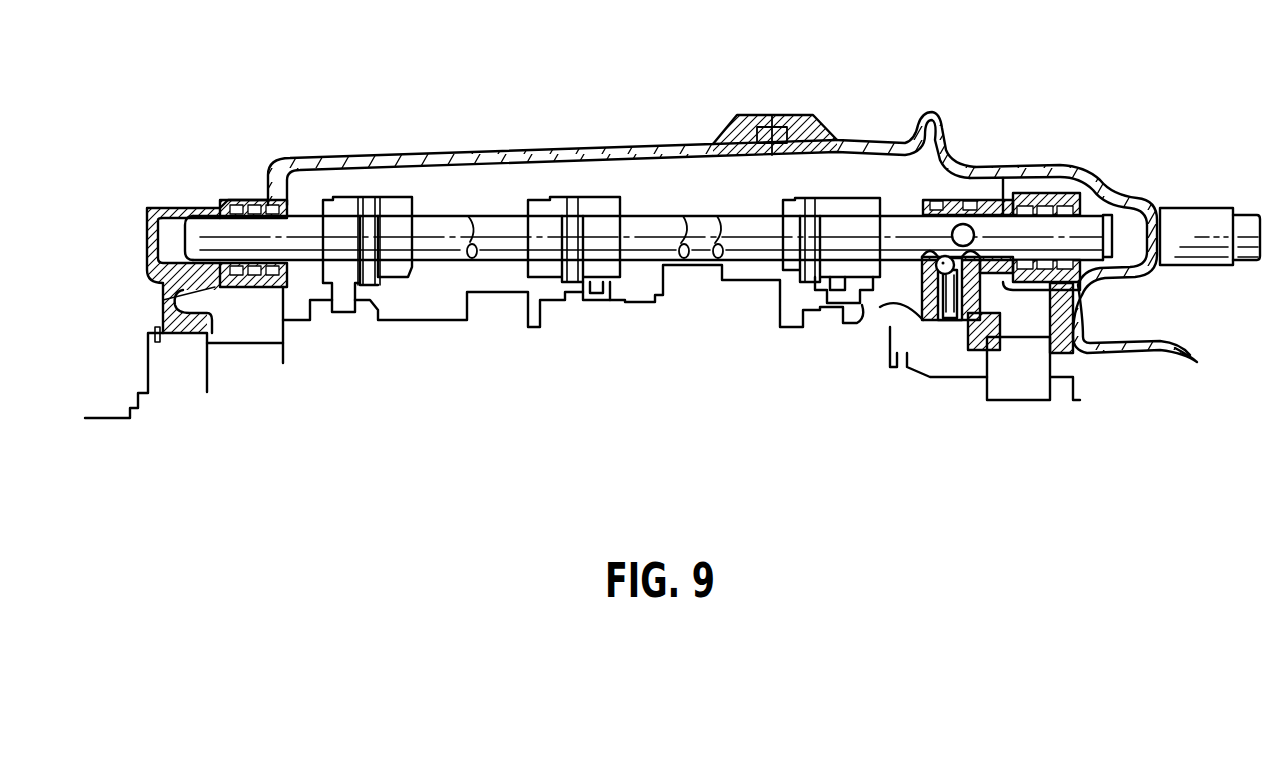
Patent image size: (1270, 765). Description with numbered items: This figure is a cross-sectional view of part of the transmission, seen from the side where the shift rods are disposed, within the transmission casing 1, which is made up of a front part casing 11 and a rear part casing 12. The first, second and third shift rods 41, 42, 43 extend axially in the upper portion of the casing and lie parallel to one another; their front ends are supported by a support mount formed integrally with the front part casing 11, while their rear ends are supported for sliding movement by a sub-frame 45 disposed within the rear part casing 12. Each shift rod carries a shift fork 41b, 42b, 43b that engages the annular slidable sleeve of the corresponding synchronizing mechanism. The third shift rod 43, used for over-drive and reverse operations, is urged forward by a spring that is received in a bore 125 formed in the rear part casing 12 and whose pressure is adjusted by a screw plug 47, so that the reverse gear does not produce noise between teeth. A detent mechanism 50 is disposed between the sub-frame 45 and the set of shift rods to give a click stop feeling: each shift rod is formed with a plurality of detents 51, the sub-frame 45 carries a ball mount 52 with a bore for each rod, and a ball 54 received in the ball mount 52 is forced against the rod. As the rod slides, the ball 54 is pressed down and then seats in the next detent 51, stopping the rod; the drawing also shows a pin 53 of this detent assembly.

The transmission casing 1 is at (344, 146).
The front part casing 11 is at (470, 152).
The rear part casing 12 is at (1063, 168).
The first shift rod 41 is at (495, 265).
The shift fork 41b is at (597, 302).
The second shift rod 42 is at (293, 267).
The shift fork 42b is at (347, 307).
The third shift rod 43 is at (740, 262).
The shift fork 43b is at (860, 305).
The sub-frame 45 is at (1014, 192).
The screw plug 47 is at (1242, 262).
The detent mechanism 50 is at (939, 284).
The detent 51 is at (980, 270).
The ball mount 52 is at (912, 331).
The pin 53 is at (940, 318).
The ball 54 is at (937, 262).
The bore 125 is at (1197, 208).